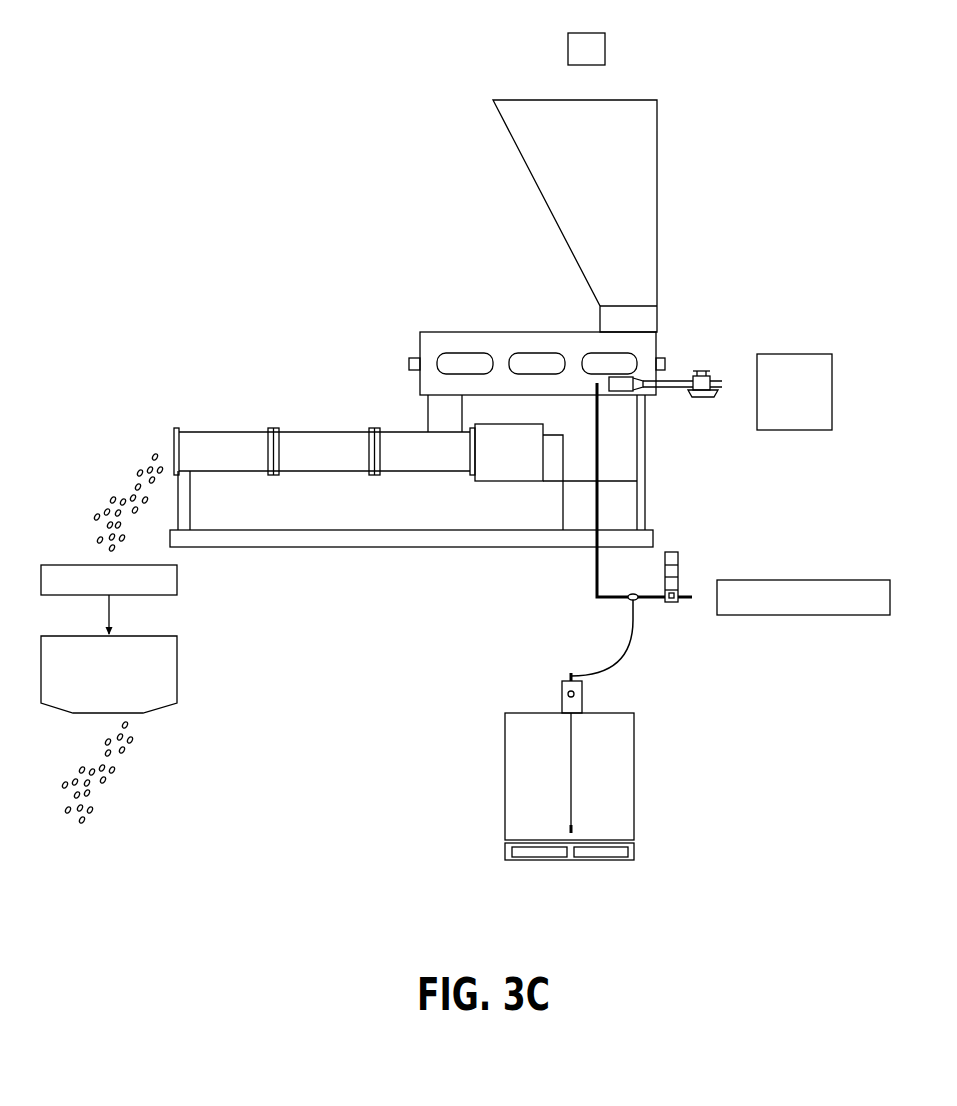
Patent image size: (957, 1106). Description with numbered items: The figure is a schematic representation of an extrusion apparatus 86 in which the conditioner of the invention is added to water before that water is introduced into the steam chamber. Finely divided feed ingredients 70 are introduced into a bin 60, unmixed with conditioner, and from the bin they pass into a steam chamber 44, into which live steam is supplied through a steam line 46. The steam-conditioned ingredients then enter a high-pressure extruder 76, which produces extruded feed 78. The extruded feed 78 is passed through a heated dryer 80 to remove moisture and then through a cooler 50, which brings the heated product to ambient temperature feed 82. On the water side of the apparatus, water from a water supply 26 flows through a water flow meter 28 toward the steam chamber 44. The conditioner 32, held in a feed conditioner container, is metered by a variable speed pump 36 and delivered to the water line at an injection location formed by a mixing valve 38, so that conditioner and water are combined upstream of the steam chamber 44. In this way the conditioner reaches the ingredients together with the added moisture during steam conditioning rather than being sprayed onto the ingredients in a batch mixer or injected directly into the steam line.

The extrusion apparatus 86 is at (232, 102).
The ingredients 70 is at (586, 98).
The bin 60 is at (515, 160).
The steam chamber 44 is at (493, 325).
The steam line 46 is at (723, 384).
The high-pressure extruder 76 is at (300, 426).
The extruded feed 78 is at (125, 487).
The heated dryer 80 is at (109, 599).
The cooler 50 is at (109, 674).
The ambient temperature feed 82 is at (126, 766).
The water flow meter 28 is at (682, 554).
The water source 26 is at (697, 597).
The mixing valve 38 is at (638, 604).
The variable speed pump 36 is at (559, 697).
The conditioner 32 is at (499, 828).